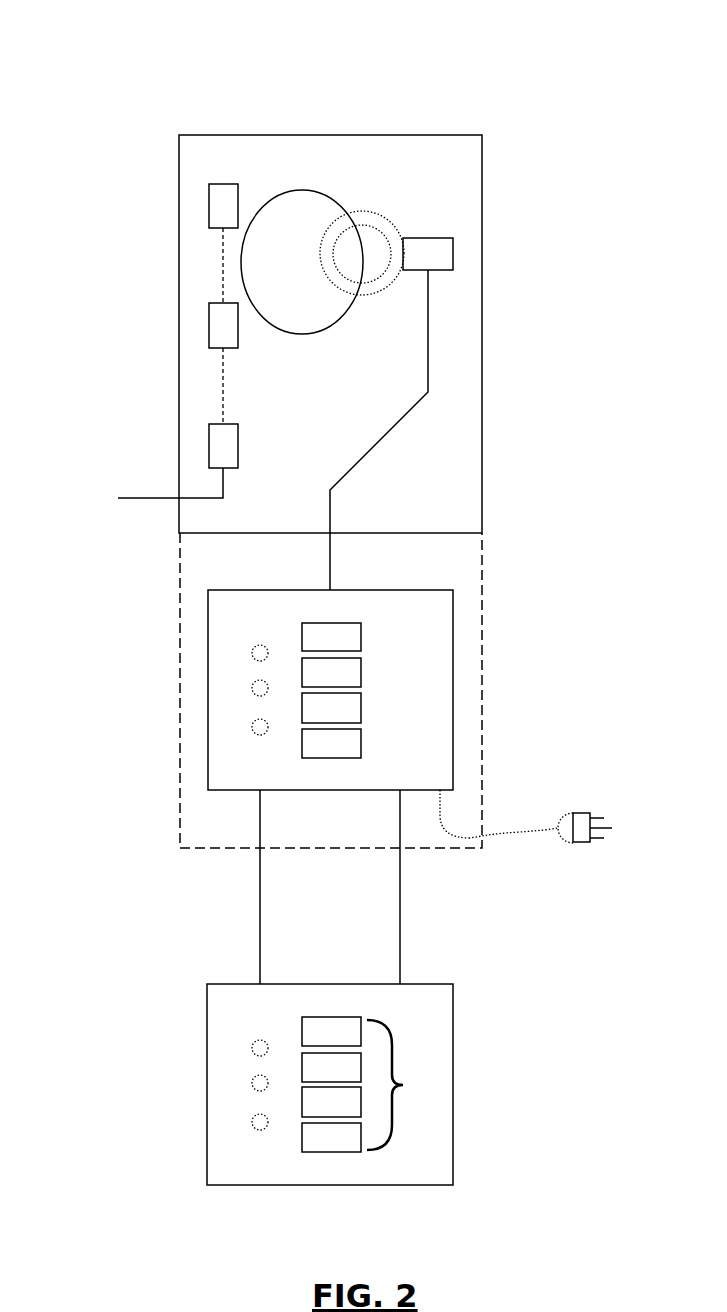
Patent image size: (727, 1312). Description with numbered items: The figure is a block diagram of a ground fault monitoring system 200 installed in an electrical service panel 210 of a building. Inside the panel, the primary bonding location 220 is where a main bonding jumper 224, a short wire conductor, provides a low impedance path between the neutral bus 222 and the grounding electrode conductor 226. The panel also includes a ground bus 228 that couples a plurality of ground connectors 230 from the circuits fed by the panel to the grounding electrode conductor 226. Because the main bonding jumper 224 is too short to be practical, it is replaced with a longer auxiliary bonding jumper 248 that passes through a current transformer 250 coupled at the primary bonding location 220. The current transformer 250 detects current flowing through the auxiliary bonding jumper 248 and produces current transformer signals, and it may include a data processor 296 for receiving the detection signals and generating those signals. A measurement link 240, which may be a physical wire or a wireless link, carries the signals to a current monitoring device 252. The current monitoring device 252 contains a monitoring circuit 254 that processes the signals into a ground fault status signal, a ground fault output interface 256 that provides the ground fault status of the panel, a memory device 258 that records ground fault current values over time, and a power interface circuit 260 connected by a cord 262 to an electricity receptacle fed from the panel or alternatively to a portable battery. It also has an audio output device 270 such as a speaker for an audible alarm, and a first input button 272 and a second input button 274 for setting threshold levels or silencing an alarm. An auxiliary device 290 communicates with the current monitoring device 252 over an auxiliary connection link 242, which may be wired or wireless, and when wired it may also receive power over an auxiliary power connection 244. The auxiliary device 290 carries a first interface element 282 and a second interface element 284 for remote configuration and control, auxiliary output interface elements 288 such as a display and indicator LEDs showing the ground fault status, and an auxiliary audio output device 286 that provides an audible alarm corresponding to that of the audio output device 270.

The ground fault monitoring system 200 is at (580, 38).
The electrical service panel 210 is at (427, 135).
The primary bonding location 220 is at (190, 240).
The neutral bus 222 is at (221, 190).
The main bonding jumper 224 is at (222, 283).
The grounding electrode conductor 226 is at (220, 322).
The ground bus 228 is at (218, 440).
The ground connectors 230 is at (190, 497).
The measurement link 240 is at (426, 380).
The auxiliary connection link 242 is at (400, 922).
The auxiliary power connection 244 is at (258, 903).
The auxiliary bonding jumper 248 is at (312, 190).
The current transformer 250 is at (378, 218).
The current monitoring device 252 is at (410, 590).
The monitoring circuit 254 is at (348, 638).
The ground fault output interface 256 is at (348, 670).
The memory device 258 is at (348, 705).
The power interface circuit 260 is at (348, 738).
The cord 262 is at (510, 830).
The audio output device 270 is at (253, 725).
The first input button 272 is at (253, 650).
The second input button 274 is at (253, 686).
The first interface element 282 is at (253, 1046).
The second interface element 284 is at (253, 1082).
The auxiliary audio output device 286 is at (253, 1120).
The auxiliary output interface elements 288 is at (403, 1085).
The auxiliary device 290 is at (418, 983).
The data processor 296 is at (435, 247).